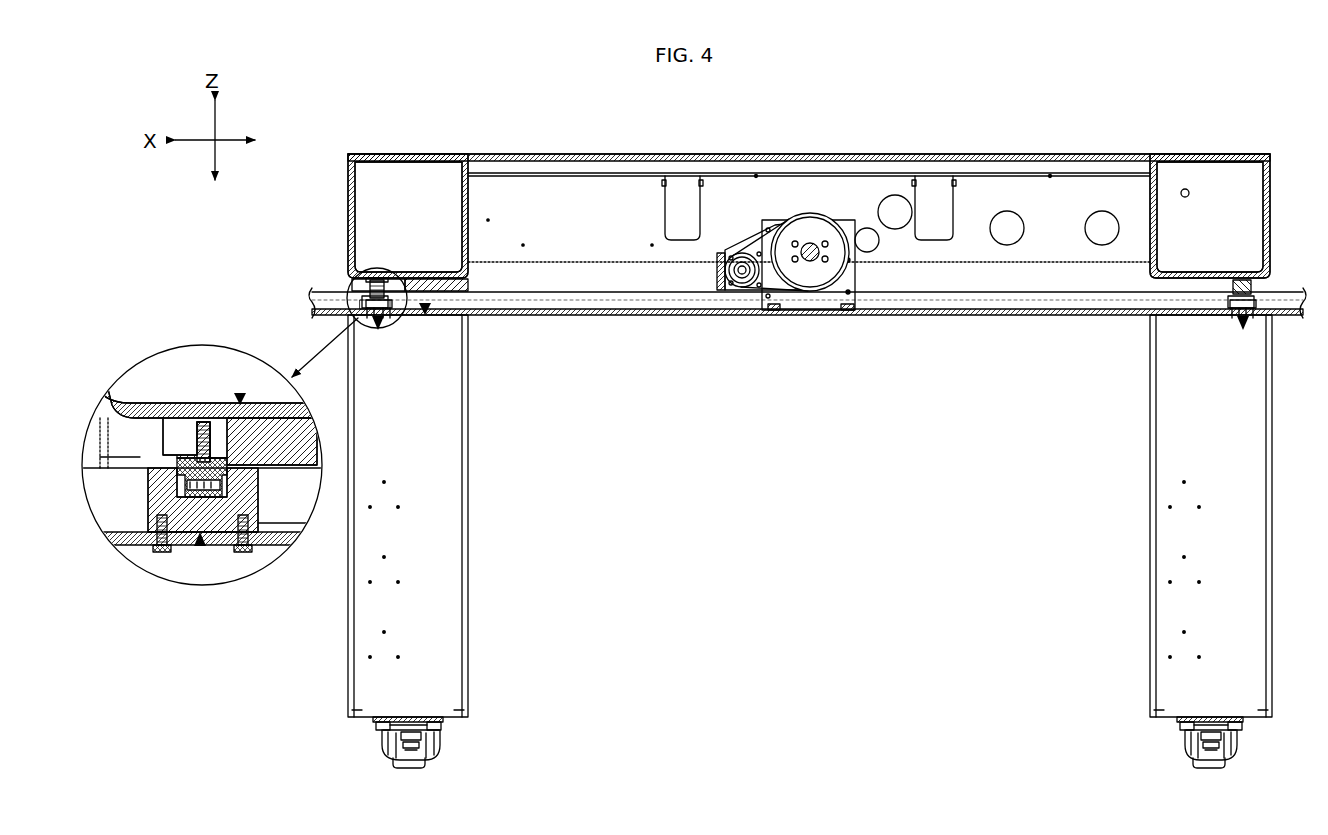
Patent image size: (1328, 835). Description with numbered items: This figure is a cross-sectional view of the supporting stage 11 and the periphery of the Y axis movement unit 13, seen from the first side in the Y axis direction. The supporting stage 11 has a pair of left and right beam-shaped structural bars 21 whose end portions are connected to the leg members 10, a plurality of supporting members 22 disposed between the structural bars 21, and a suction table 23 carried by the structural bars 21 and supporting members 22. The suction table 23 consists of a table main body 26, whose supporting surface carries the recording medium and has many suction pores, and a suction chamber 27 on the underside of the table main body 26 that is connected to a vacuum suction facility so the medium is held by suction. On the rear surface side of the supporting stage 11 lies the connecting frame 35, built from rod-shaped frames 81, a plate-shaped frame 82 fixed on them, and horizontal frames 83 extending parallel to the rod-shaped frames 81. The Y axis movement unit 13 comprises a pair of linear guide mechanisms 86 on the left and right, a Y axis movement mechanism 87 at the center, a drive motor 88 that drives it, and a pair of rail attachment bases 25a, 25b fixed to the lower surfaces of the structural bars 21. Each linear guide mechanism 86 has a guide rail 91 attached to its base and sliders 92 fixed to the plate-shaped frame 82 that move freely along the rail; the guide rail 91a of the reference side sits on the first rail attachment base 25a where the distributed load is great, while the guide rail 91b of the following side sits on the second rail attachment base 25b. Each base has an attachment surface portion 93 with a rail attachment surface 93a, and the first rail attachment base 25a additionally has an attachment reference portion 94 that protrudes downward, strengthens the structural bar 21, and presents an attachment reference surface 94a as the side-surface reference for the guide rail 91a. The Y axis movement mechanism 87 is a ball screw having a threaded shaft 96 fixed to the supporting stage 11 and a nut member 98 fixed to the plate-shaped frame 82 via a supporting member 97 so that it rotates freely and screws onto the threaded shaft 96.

The leg member 10 is at (466, 490).
The supporting stage 11 is at (1178, 128).
The Y axis movement unit 13 is at (788, 318).
The structural bar 21 is at (348, 203).
The supporting member 22 is at (667, 180).
The suction table 23 is at (809, 116).
The first rail attachment base 25a is at (445, 334).
The second rail attachment base 25b is at (1290, 300).
The table main body 26 is at (1046, 154).
The suction chamber 27 is at (1098, 160).
The connecting frame 35 is at (773, 332).
The rod-shaped frame 81 is at (317, 298).
The plate-shaped frame 82 is at (530, 312).
The horizontal frame 83 is at (566, 301).
The linear guide mechanism 86 is at (378, 330).
The Y axis movement mechanism 87 is at (788, 299).
The drive motor 88 is at (747, 285).
The guide rail 91 is at (672, 405).
The guide rail of the reference side 91a is at (360, 282).
The guide rail of the following side 91b is at (1231, 294).
The slider 92 is at (393, 312).
The attachment surface portion 93 is at (376, 280).
The rail attachment surface 93a is at (1254, 288).
The attachment reference portion 94 is at (430, 282).
The attachment reference surface 94a is at (205, 442).
The threaded shaft 96 is at (810, 260).
The supporting member 97 is at (836, 222).
The nut member 98 is at (828, 270).